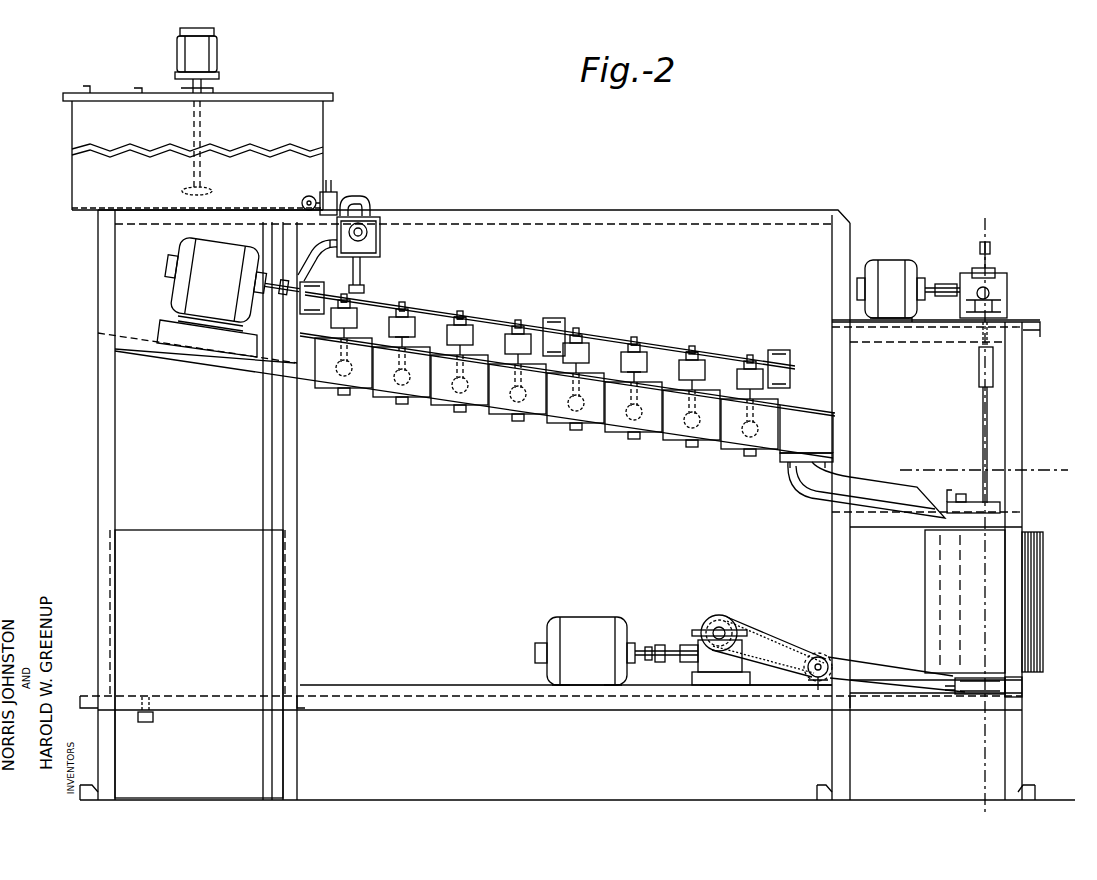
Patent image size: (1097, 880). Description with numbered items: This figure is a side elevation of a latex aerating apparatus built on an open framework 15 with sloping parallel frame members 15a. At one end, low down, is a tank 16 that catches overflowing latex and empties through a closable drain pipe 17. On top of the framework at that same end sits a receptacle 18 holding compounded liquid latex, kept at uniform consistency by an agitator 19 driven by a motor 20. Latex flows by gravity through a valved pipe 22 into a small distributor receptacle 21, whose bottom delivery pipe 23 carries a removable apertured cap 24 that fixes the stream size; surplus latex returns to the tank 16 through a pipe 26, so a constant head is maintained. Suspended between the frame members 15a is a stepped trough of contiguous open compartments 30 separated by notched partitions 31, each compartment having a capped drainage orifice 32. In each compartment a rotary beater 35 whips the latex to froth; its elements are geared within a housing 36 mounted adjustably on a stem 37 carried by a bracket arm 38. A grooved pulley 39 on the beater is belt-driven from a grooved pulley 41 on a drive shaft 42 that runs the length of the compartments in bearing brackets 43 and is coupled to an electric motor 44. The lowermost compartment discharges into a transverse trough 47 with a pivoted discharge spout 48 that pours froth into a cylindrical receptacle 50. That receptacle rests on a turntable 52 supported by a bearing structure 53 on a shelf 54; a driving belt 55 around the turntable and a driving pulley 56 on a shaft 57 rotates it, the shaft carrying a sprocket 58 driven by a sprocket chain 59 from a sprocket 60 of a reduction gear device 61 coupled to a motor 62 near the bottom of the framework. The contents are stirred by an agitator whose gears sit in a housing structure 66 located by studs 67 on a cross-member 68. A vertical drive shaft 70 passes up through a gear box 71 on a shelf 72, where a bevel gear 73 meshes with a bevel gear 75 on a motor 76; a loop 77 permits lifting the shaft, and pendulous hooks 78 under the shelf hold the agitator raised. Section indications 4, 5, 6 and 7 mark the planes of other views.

The section line 4- 4 is at (578, 307).
The section line 5- 5 is at (1005, 222).
The section line 6- 6 is at (904, 477).
The section line 7- 7 is at (352, 181).
The framework 15 is at (297, 523).
The frame member 15a is at (800, 410).
The tank 16 is at (205, 536).
The drain pipe 17 is at (155, 720).
The receptacle 18 is at (85, 122).
The agitator 19 is at (185, 190).
The motor 20 is at (215, 54).
The distributor receptacle 21 is at (382, 245).
The valved pipe 22 is at (366, 206).
The delivery pipe 23 is at (362, 271).
The apertured cap 24 is at (366, 289).
The pipe 26 is at (320, 251).
The compartment 30 is at (378, 384).
The partition 31 is at (437, 402).
The drainage orifice 32 is at (342, 396).
The beater 35 is at (445, 407).
The housing 36 is at (358, 320).
The stem 37 is at (417, 320).
The bracket arm 38 is at (411, 338).
The grooved pulley 39 is at (461, 318).
The grooved pulley 41 is at (404, 311).
The drive shaft 42 is at (672, 345).
The bearing bracket 43 is at (310, 290).
The electric motor 44 is at (176, 292).
The trough 47 is at (800, 441).
The discharge spout 48 is at (846, 479).
The receptacle 50 is at (925, 549).
The turntable 52 is at (1013, 698).
The bearing structure 53 is at (975, 696).
The shelf 54 is at (953, 690).
The driving belt 55 is at (873, 662).
The driving pulley 56 is at (818, 682).
The shaft 57 is at (817, 655).
The sprocket 58 is at (802, 661).
The sprocket chain 59 is at (780, 686).
The sprocket 60 is at (736, 632).
The reduction gear device 61 is at (712, 618).
The motor 62 is at (585, 622).
The housing structure 66 is at (1001, 508).
The stud 67 is at (963, 495).
The cross-member 68 is at (946, 500).
The vertical drive shaft 70 is at (983, 416).
The gear box 71 is at (1007, 279).
The shelf 72 is at (1030, 323).
The bevel gear 73 is at (1008, 295).
The bevel gear 75 is at (968, 283).
The motor 76 is at (888, 263).
The loop 77 is at (991, 251).
The pendulous hook 78 is at (979, 383).